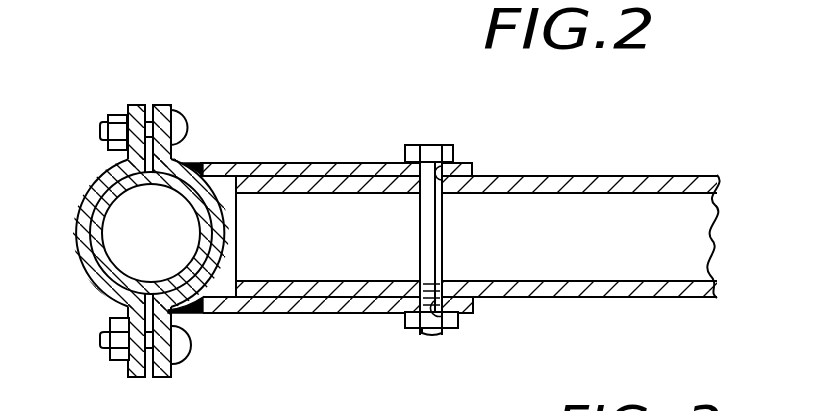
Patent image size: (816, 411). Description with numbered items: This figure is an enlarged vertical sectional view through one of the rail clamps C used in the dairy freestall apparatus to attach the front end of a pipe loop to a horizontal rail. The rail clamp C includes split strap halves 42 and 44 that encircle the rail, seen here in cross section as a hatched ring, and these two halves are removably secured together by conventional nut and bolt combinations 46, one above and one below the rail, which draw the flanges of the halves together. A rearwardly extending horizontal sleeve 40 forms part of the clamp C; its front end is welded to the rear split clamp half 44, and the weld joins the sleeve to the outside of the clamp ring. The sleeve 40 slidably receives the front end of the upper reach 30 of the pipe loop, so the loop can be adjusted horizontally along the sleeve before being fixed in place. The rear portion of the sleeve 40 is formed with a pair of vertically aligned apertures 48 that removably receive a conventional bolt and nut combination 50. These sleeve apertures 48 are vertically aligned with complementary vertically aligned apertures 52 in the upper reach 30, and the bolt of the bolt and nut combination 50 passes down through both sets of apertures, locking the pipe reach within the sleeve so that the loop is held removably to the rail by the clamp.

The upper reach 30 is at (659, 197).
The sleeve 40 is at (296, 164).
The split strap half 42 is at (87, 282).
The rear split clamp half 44 is at (212, 283).
The nut and bolt combinations 46 is at (135, 113).
The apertures 48 is at (435, 175).
The bolt and nut combination 50 is at (436, 235).
The apertures 52 is at (425, 194).
The rail clamp C is at (83, 202).